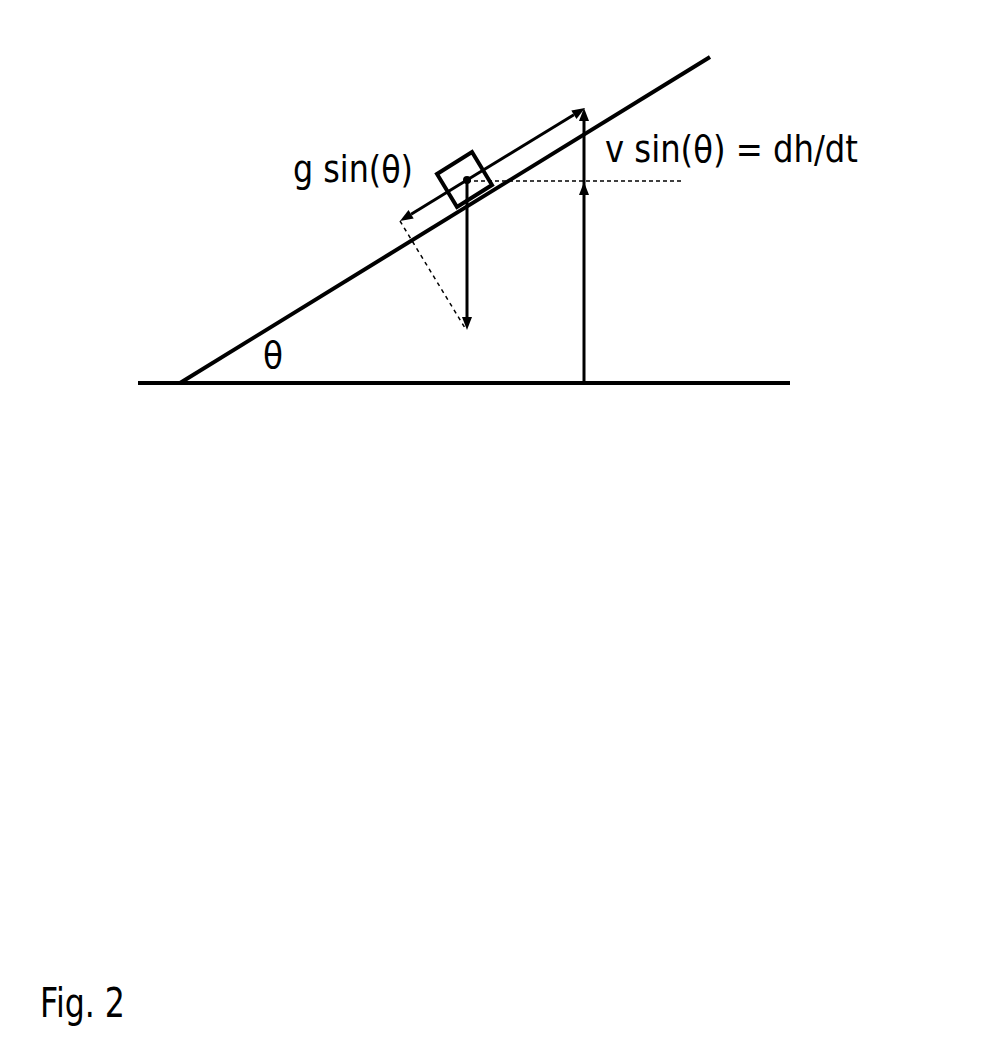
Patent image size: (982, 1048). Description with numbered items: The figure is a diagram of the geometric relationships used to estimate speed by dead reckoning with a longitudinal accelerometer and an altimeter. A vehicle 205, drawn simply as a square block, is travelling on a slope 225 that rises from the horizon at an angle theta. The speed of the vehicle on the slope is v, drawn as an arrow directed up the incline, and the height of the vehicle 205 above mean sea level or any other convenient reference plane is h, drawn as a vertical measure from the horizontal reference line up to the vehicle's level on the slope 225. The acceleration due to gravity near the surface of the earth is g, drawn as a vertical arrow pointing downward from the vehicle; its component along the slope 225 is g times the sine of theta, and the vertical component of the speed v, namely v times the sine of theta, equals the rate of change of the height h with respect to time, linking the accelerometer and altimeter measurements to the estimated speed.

The vehicle 205 is at (458, 155).
The slope 225 is at (638, 96).
The speed of the vehicle v is at (526, 142).
The acceleration due to gravity g is at (478, 255).
The height of the vehicle h is at (594, 245).